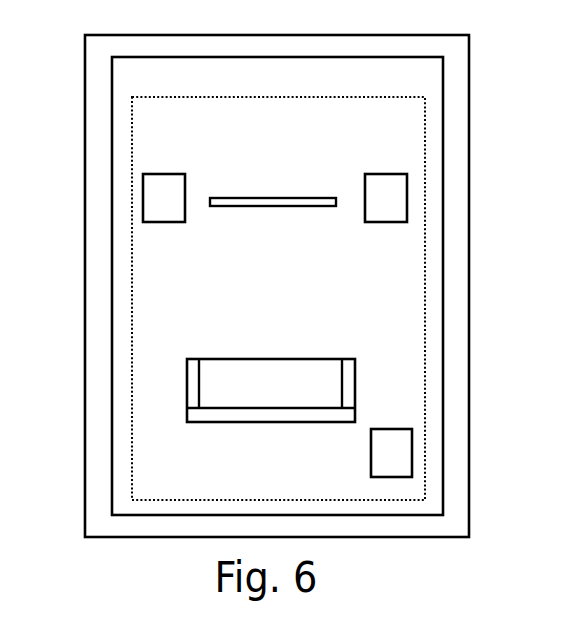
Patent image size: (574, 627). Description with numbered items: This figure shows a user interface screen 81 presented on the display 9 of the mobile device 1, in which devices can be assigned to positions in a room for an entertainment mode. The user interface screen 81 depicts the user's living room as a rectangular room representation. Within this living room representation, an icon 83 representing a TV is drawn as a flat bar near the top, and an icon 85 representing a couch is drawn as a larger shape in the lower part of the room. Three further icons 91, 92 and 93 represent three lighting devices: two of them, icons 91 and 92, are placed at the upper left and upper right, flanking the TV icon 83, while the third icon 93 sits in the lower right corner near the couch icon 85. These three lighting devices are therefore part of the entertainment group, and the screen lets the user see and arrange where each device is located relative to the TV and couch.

The mobile device 1 is at (469, 91).
The display 9 is at (112, 262).
The user interface screen 81 is at (132, 118).
The icon representing a TV 83 is at (282, 198).
The icon representing a couch 85 is at (275, 422).
The icon representing a lighting device 91 is at (144, 200).
The icon representing a lighting device 92 is at (407, 205).
The icon representing a lighting device 93 is at (412, 465).